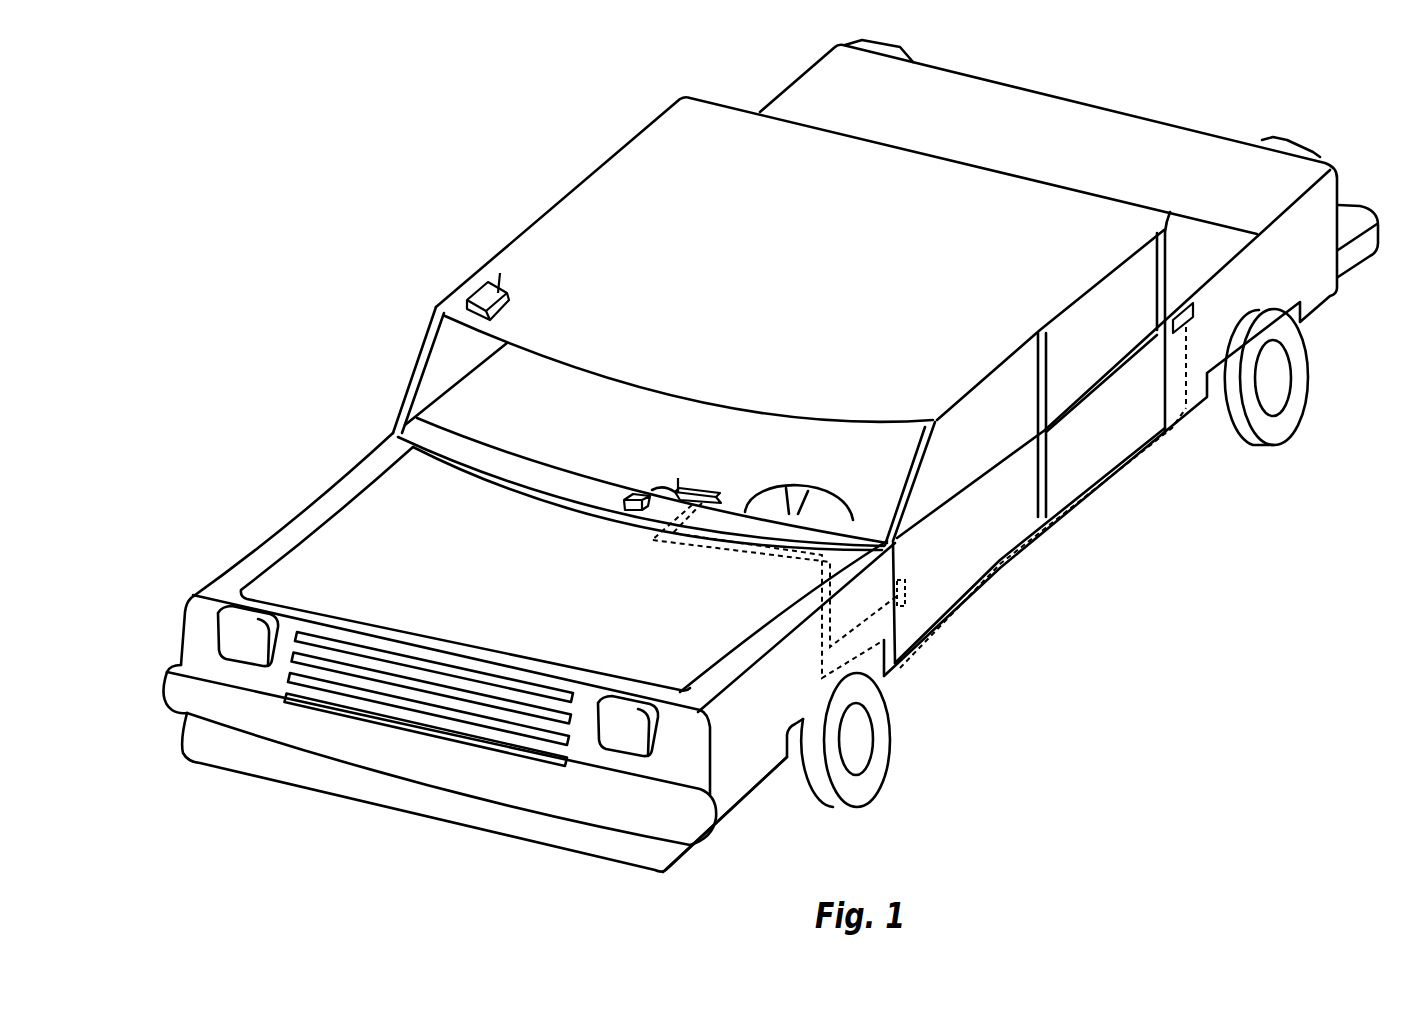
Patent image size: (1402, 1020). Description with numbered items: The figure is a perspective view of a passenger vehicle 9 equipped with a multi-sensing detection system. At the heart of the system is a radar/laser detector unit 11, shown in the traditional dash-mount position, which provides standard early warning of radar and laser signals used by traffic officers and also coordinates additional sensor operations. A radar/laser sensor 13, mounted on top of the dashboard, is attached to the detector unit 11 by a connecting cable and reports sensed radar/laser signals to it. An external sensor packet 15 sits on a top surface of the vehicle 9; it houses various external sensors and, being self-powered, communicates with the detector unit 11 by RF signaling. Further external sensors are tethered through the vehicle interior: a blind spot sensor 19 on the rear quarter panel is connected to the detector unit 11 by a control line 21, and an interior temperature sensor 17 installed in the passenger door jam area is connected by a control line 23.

The vehicle 9 is at (352, 313).
The radar/laser detector unit 11 is at (695, 488).
The radar/laser sensor 13 is at (630, 512).
The external sensor packet 15 is at (510, 309).
The interior temperature sensor 17 is at (905, 590).
The blind spot sensor 19 is at (1195, 307).
The control line 21 is at (1128, 460).
The control line 23 is at (845, 633).